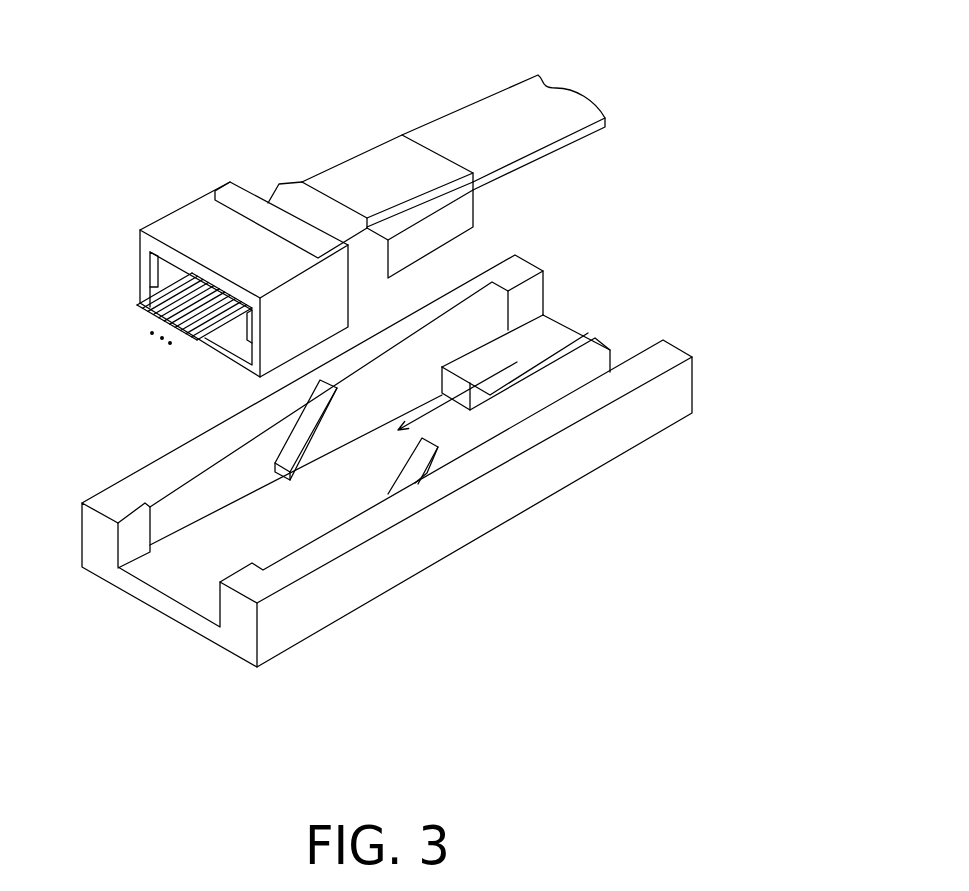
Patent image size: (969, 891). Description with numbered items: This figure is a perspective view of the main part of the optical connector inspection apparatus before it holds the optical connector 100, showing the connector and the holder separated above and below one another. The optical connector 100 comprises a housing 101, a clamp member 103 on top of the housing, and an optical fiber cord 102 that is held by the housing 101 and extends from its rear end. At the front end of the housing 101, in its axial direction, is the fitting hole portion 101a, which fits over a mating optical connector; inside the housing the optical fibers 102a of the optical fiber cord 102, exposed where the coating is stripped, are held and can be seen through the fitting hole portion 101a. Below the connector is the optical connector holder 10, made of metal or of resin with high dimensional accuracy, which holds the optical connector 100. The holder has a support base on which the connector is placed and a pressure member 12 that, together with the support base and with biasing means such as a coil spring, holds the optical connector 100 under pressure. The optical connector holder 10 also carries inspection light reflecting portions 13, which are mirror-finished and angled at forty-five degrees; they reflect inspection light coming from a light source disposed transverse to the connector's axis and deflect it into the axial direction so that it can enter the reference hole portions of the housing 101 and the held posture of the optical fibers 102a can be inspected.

The optical connector 100 is at (339, 148).
The housing 101 is at (198, 218).
The fitting hole portion 101a is at (232, 340).
The optical fiber cord 102 is at (473, 131).
The optical fibers 102a is at (197, 343).
The clamp member 103 is at (302, 203).
The optical connector holder 10 is at (503, 497).
The pressure member 12 is at (527, 357).
The inspection light reflecting portions 13 is at (303, 432).